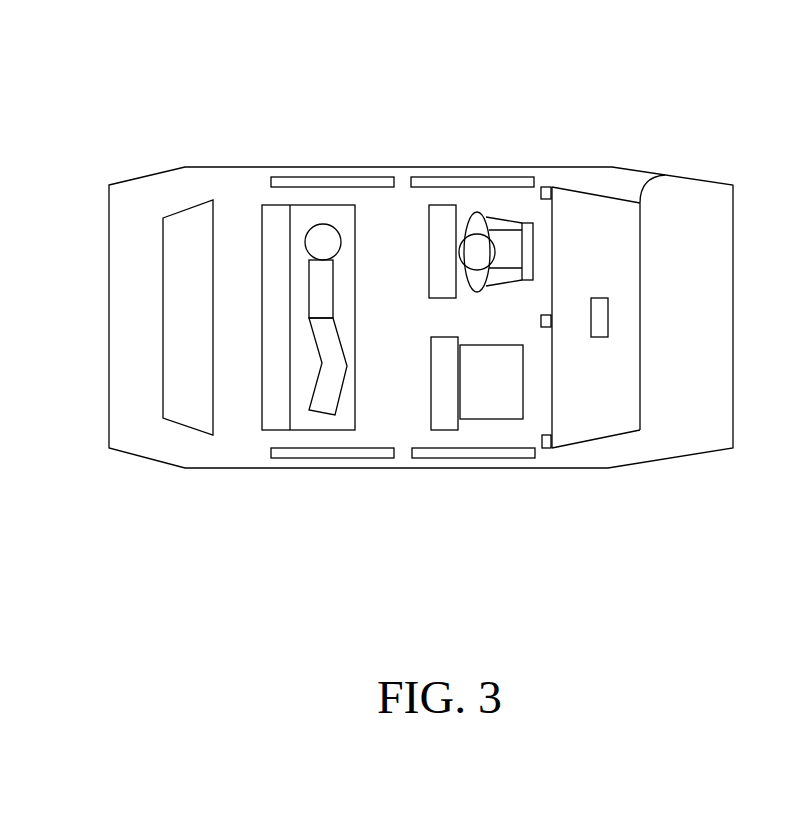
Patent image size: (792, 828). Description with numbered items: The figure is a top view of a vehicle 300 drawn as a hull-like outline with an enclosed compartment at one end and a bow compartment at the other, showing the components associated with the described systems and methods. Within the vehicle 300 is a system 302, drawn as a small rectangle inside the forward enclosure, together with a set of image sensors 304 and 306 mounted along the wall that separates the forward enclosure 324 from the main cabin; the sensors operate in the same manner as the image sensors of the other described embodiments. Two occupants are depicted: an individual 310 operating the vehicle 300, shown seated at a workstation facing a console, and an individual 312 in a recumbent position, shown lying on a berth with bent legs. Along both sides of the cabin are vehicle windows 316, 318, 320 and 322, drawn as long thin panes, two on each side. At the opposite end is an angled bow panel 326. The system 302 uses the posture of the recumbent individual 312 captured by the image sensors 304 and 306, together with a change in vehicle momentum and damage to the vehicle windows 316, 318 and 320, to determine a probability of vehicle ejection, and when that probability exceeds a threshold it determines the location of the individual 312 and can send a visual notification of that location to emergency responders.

The vehicle 300 is at (554, 80).
The system 302 is at (605, 337).
The image sensor 304 is at (545, 186).
The image sensor 306 is at (546, 314).
The individual 310 is at (520, 283).
The individual 312 is at (334, 270).
The vehicle window 316 is at (422, 459).
The vehicle window 318 is at (282, 458).
The vehicle window 320 is at (280, 177).
The storage compartment 322 is at (421, 177).
The cabin 324 is at (646, 192).
The bow compartment 326 is at (167, 217).